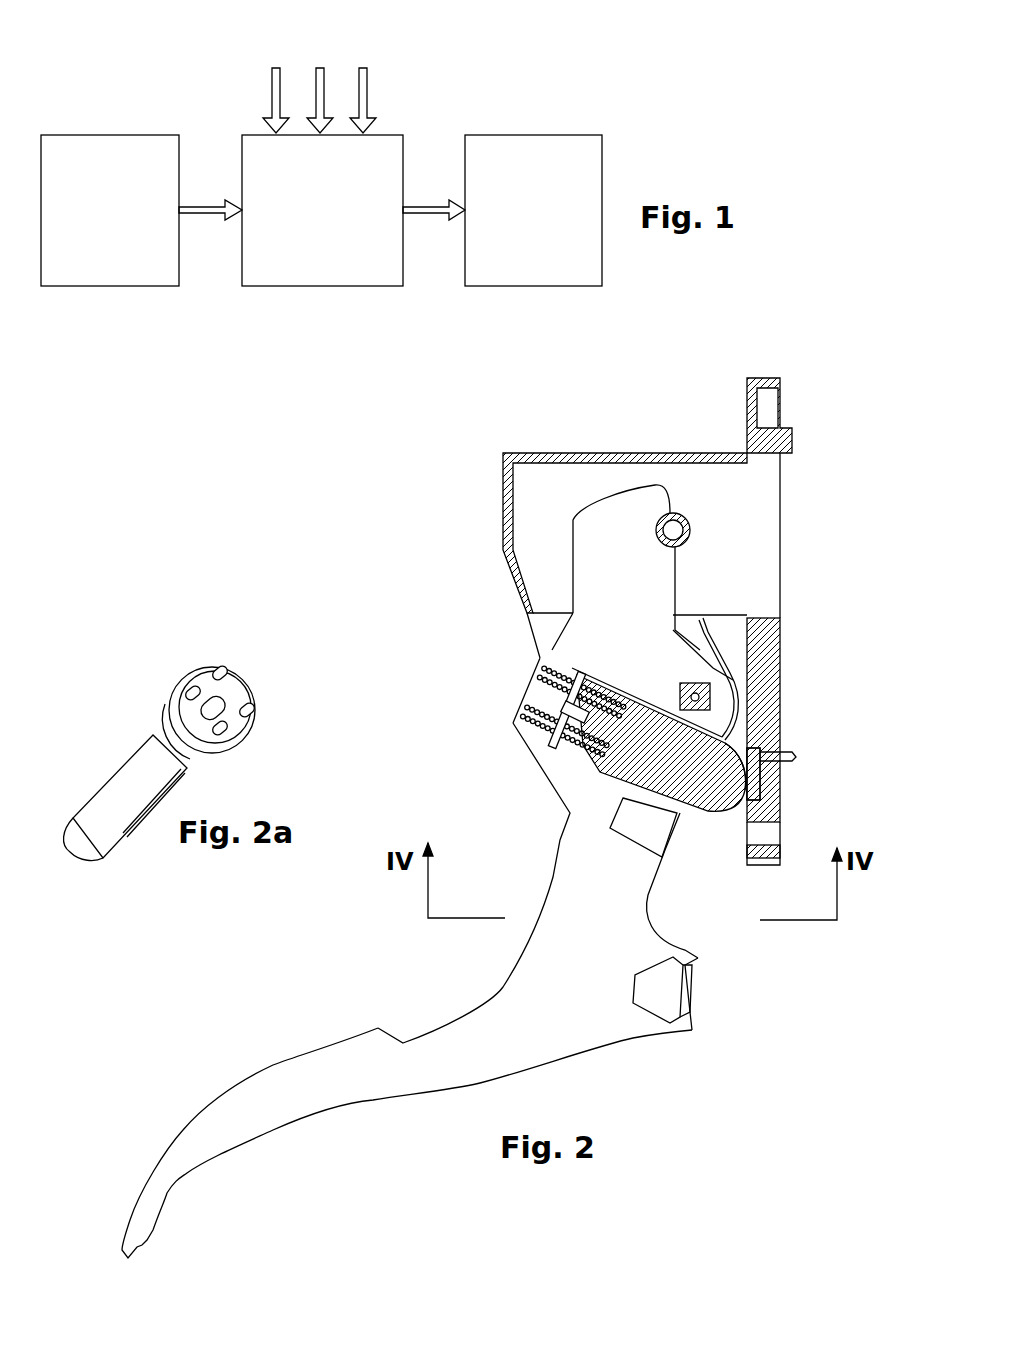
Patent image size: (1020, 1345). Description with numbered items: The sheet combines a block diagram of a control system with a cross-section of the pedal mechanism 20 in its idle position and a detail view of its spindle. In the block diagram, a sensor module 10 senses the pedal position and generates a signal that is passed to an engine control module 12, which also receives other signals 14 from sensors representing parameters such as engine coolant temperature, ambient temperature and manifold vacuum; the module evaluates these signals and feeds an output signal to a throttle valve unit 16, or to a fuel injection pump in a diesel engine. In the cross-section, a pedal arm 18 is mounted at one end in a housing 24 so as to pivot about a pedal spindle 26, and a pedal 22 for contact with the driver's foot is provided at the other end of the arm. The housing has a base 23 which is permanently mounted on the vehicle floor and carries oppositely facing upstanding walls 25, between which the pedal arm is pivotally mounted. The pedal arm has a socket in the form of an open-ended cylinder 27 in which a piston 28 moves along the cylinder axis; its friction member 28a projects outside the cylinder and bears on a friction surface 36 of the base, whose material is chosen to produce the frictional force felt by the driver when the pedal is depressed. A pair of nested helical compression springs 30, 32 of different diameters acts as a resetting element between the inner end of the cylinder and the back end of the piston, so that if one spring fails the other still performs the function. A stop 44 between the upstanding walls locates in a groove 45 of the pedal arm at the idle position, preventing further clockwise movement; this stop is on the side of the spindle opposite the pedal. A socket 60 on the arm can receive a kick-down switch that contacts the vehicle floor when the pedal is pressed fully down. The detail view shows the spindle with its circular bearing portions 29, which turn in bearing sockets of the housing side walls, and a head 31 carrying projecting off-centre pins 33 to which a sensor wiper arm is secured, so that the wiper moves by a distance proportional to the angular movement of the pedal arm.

In FIG. 1, the sensor module 10 is at (118, 283).
In FIG. 1, the engine control module 12 is at (325, 283).
In FIG. 1, the other signals 14 is at (361, 66).
In FIG. 1, the throttle valve unit 16 is at (535, 283).
In FIG. 2, the pedal arm 18 is at (500, 987).
In FIG. 2, the pedal mechanism 20 is at (390, 596).
In FIG. 2, the pedal 22 is at (178, 1135).
In FIG. 2, the base 23 is at (776, 690).
In FIG. 2, the housing 24 is at (664, 425).
In FIG. 2, the upstanding walls 25 is at (778, 483).
In FIG. 2, the pedal spindle 26 is at (707, 695).
In FIG. 2A, the pedal spindle 26 is at (94, 760).
In FIG. 2, the cylinder 27 is at (557, 750).
In FIG. 2A, the cylinder 27 is at (118, 827).
In FIG. 2, the piston 28 is at (700, 813).
In FIG. 2, the friction member 28a is at (723, 812).
In FIG. 2A, the circular bearing portions 29 is at (163, 728).
In FIG. 2, the helical compression spring 30 is at (513, 724).
In FIG. 2A, the head 31 is at (197, 677).
In FIG. 2, the helical compression spring 32 is at (540, 712).
In FIG. 2A, the pins 33 is at (230, 672).
In FIG. 2, the friction surface 36 is at (762, 772).
In FIG. 2, the stop 44 is at (692, 528).
In FIG. 2, the groove 45 is at (672, 490).
In FIG. 2, the socket 60 is at (692, 993).